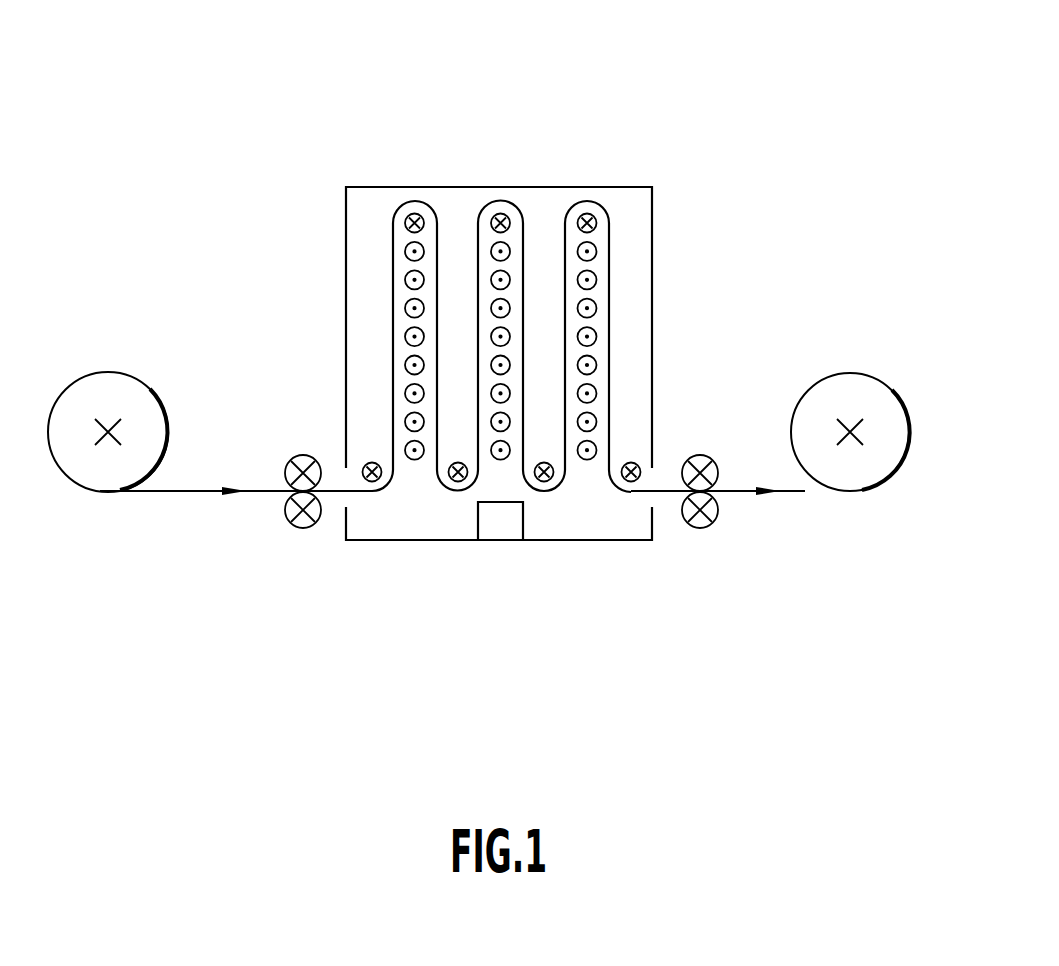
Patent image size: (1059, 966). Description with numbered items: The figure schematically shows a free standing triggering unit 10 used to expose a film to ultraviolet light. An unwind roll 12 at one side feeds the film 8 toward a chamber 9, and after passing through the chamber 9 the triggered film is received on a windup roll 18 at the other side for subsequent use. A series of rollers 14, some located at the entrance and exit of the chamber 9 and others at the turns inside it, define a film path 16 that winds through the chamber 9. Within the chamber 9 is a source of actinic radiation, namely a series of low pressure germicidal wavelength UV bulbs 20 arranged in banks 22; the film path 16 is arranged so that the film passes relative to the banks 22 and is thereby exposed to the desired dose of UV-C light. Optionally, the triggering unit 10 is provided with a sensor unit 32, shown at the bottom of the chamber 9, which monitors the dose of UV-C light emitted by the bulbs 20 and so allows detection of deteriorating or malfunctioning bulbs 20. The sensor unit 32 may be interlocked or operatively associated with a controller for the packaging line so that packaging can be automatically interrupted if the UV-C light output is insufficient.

The film 8 is at (187, 498).
The chamber 9 is at (318, 203).
The triggering unit 10 is at (665, 93).
The unwind roll 12 is at (112, 383).
The rollers 14 is at (489, 216).
The film path 16 is at (392, 343).
The windup roll 18 is at (856, 373).
The UV bulbs 20 is at (596, 251).
The banks 22 is at (575, 262).
The sensor unit 32 is at (499, 525).